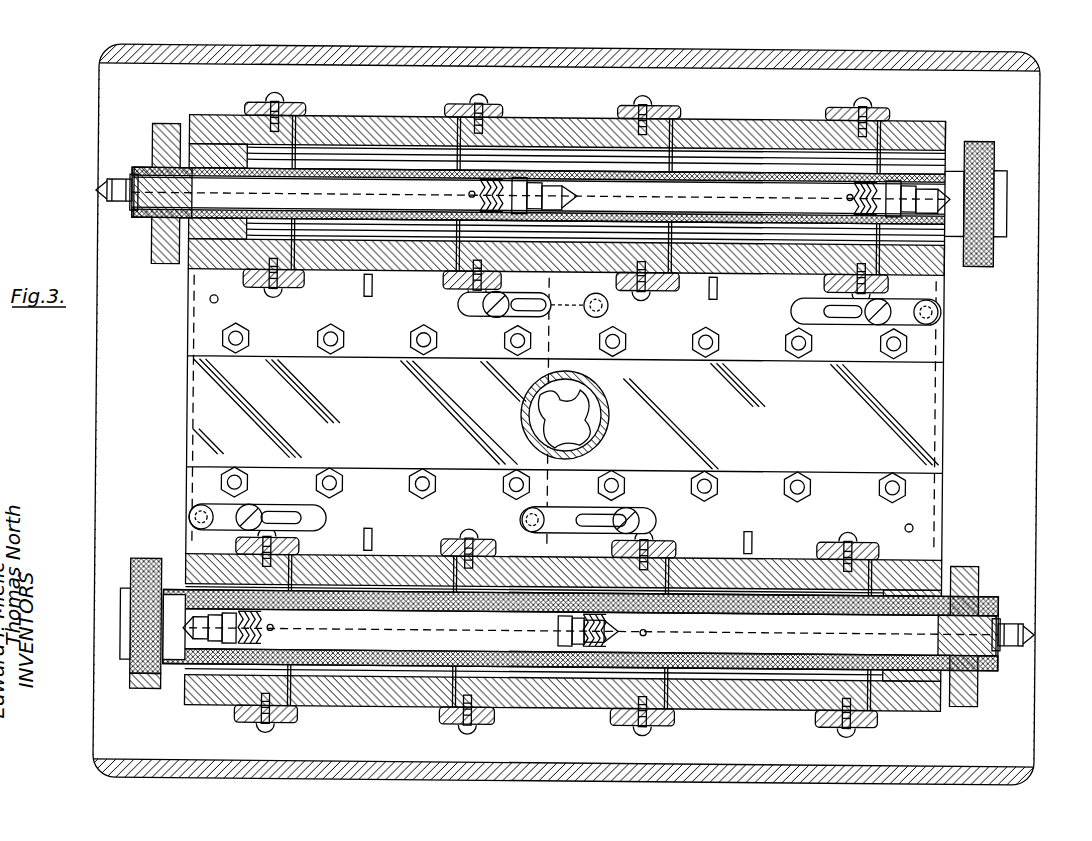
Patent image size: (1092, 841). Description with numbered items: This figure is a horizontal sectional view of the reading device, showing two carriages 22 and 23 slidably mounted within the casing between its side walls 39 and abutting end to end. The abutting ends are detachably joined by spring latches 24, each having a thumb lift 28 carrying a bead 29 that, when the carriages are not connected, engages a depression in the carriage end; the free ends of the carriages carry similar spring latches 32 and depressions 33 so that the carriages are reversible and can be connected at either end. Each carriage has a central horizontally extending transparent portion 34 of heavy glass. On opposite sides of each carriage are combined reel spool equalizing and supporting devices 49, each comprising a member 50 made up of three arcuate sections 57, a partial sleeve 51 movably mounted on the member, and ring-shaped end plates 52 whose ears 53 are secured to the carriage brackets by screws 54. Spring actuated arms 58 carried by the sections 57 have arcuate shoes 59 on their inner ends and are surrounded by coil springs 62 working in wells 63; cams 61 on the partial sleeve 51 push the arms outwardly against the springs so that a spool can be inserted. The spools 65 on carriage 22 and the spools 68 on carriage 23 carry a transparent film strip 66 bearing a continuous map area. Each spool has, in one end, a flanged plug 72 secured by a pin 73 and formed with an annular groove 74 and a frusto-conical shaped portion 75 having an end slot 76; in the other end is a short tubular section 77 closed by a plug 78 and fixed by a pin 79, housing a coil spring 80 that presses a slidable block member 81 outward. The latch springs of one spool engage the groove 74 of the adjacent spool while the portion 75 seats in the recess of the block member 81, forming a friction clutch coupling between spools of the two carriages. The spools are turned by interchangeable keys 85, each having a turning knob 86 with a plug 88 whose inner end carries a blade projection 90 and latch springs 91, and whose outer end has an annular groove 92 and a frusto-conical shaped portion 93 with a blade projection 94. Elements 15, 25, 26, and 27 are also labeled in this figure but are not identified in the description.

The central opening 15 is at (602, 418).
The carriage 22 is at (200, 272).
The carriage 23 is at (935, 120).
The spring latches 24 is at (580, 366).
The slot plate 25 is at (548, 317).
The slot 26 is at (520, 311).
The clamping screw 27 is at (485, 315).
The thumb lift 28 is at (598, 317).
The bead 29 is at (606, 310).
The spring latches 32 is at (940, 322).
The depressions 33 is at (208, 304).
The transparent portion 34 is at (186, 415).
The side walls 39 is at (975, 66).
The combined reel spool equalizing and supporting device 49 is at (372, 116).
The member 50 is at (432, 118).
The partial sleeve 51 is at (330, 275).
The ring-shaped end plates 52 is at (295, 108).
The ears 53 is at (460, 118).
The screws 54 is at (272, 100).
The arcuate sections 57 is at (380, 118).
The spring actuated arms 58 is at (365, 212).
The arcuate shoes 59 is at (322, 212).
The cams 61 is at (366, 298).
The coil springs 62 is at (392, 214).
The wells 63 is at (345, 150).
The spool 65 is at (290, 205).
The transparent film strip 66 is at (236, 150).
The spool 68 is at (640, 185).
The flanged plug 72 is at (905, 630).
The pin 73 is at (225, 212).
The annular groove 74 is at (165, 258).
The frusto-conical shaped portion 75 is at (150, 165).
The slot 76 is at (150, 240).
The short tubular section 77 is at (530, 180).
The plug 78 is at (466, 195).
The pin 79 is at (818, 222).
The coil spring 80 is at (492, 180).
The block member 81 is at (520, 178).
The keys 85 is at (163, 128).
The turning knob 86 is at (190, 125).
The plug 88 is at (112, 185).
The blade projection 90 is at (145, 222).
The latch springs 91 is at (218, 140).
The annular groove 92 is at (128, 205).
The frusto-conical shaped portion 93 is at (104, 194).
The blade projection 94 is at (95, 190).